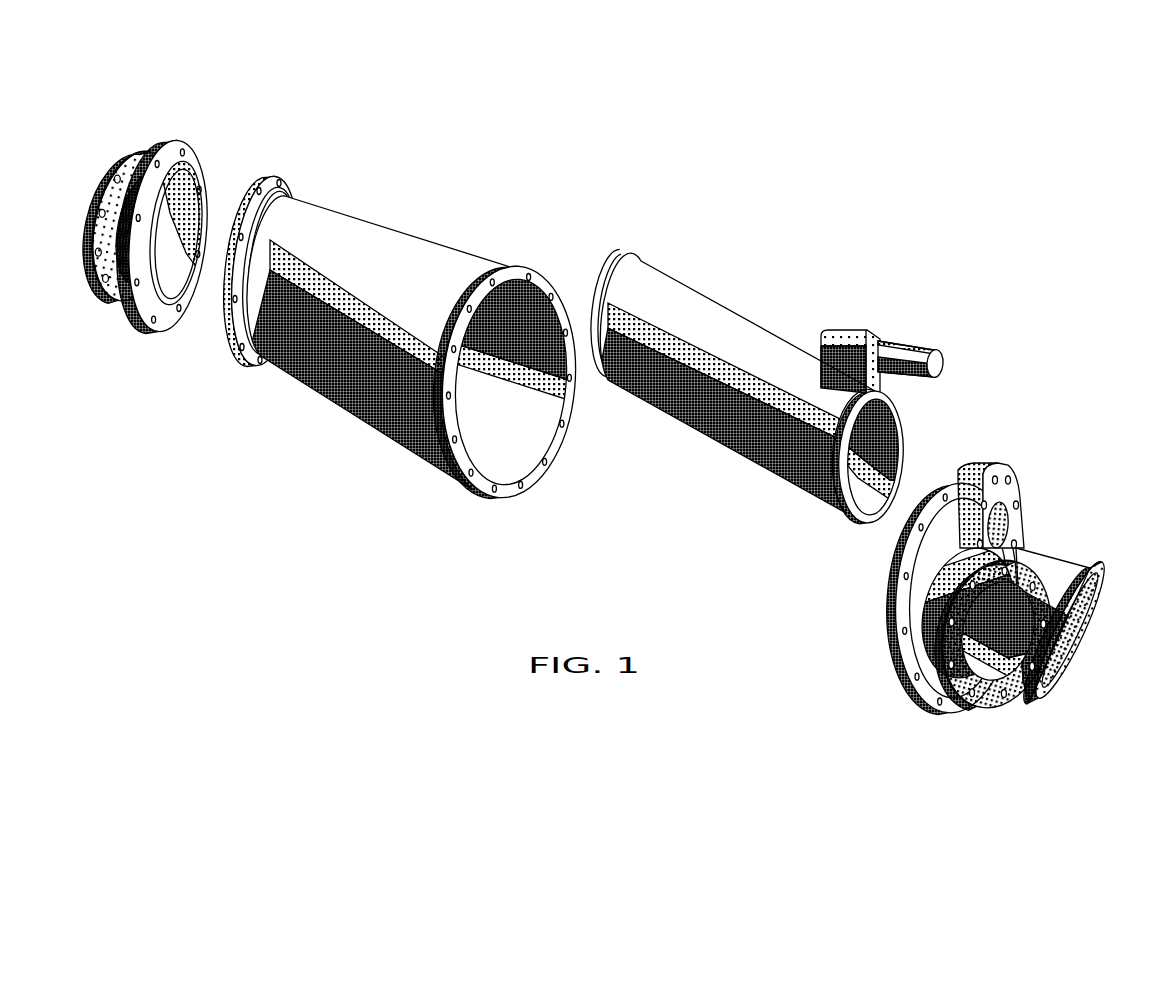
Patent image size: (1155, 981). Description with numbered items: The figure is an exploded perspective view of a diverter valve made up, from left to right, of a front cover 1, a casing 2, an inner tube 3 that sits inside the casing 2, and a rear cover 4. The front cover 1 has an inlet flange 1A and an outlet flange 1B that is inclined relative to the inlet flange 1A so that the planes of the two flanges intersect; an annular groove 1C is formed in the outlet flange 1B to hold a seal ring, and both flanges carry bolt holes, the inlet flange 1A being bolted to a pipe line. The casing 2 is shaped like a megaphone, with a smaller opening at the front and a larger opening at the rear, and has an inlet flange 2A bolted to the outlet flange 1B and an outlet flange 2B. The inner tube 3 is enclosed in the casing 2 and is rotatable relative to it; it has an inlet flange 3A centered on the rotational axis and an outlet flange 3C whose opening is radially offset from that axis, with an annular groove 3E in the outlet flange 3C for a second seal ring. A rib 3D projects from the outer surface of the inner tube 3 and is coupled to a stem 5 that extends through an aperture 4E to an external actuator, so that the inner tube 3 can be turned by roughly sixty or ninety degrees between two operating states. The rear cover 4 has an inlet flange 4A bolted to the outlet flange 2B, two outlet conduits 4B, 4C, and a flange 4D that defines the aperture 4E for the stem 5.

The front cover 1 is at (158, 239).
The inlet flange 1A is at (96, 282).
The outlet flange 1B is at (157, 326).
The annular groove 1C is at (173, 158).
The casing 2 is at (404, 359).
The inlet flange 2A is at (242, 356).
The outlet flange 2B is at (489, 489).
The inner tube 3 is at (770, 399).
The inlet flange 3A is at (593, 373).
The outlet flange 3C is at (845, 514).
The rib 3D is at (834, 322).
The annular groove 3E is at (892, 482).
The rear cover 4 is at (1015, 565).
The inlet flange 4A is at (898, 664).
The outlet conduit 4B is at (1089, 568).
The outlet conduit 4C is at (984, 690).
The flange 4D is at (1022, 496).
The aperture 4E is at (993, 518).
The stem 5 is at (890, 338).